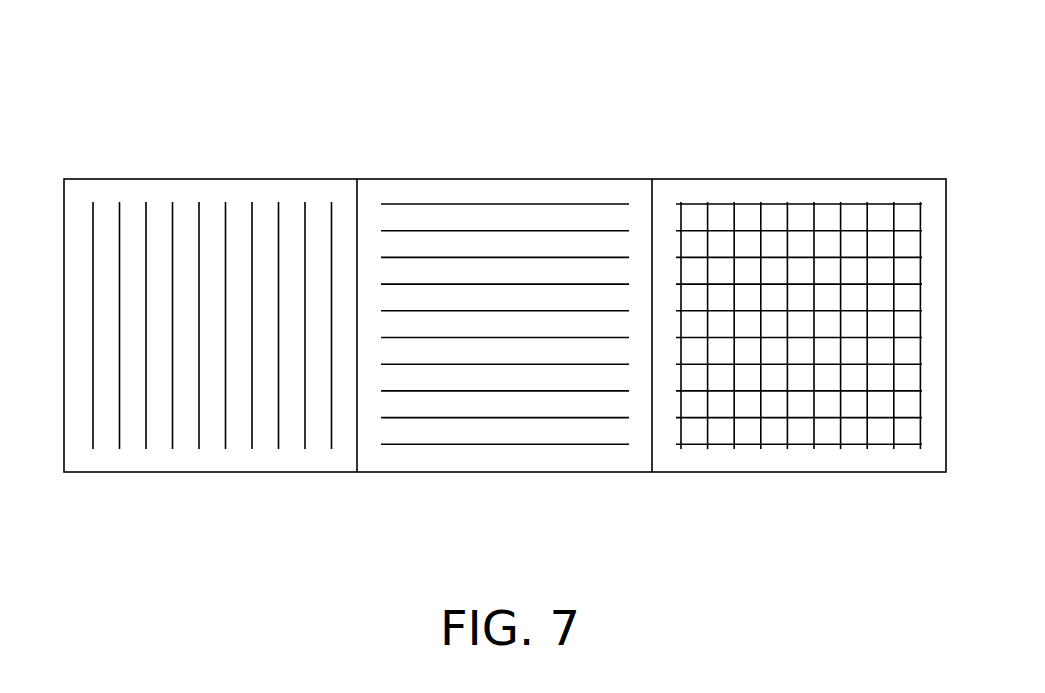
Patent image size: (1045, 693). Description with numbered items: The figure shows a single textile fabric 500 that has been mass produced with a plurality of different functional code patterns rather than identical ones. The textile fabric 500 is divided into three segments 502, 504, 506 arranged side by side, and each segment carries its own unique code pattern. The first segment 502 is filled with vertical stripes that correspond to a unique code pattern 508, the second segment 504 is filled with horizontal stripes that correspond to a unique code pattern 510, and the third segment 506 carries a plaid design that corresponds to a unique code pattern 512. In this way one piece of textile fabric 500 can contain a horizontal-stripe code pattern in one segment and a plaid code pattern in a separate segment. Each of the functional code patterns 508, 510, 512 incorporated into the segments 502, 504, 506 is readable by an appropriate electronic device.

The textile fabric 500 is at (96, 122).
The segment 502 is at (213, 490).
The segment 504 is at (506, 490).
The segment 506 is at (801, 490).
The code pattern 508 is at (200, 184).
The code pattern 510 is at (494, 186).
The code pattern 512 is at (801, 184).